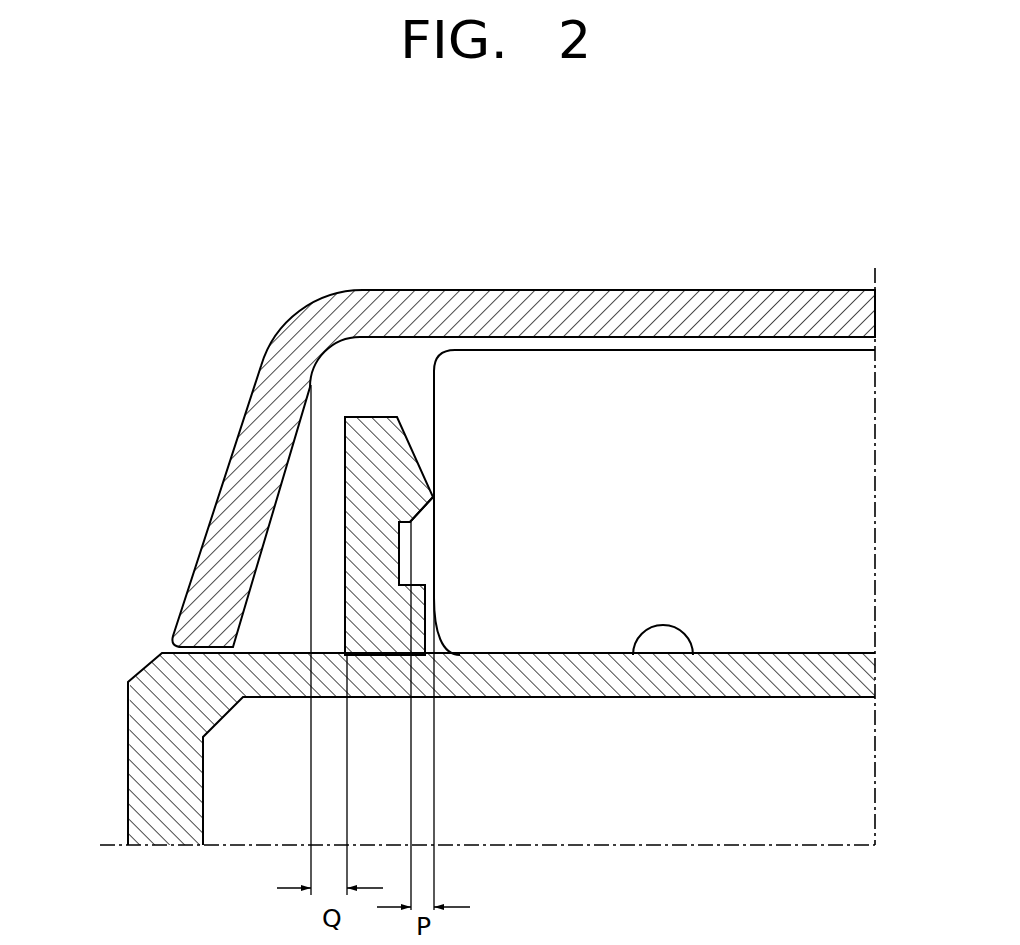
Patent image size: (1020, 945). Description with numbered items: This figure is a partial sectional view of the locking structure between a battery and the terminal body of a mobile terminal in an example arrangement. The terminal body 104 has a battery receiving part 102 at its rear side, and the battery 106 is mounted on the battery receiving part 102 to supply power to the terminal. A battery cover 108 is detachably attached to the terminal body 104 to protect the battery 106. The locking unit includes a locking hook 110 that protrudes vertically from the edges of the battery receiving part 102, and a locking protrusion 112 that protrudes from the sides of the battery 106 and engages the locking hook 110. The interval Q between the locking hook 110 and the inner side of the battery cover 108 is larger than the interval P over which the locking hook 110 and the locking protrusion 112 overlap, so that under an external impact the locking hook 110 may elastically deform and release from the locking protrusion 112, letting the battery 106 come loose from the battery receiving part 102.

The battery receiving part 102 is at (694, 656).
The terminal body 104 is at (580, 677).
The battery 106 is at (740, 392).
The battery cover 108 is at (529, 297).
The locking hook 110 is at (344, 435).
The locking protrusion 112 is at (423, 546).